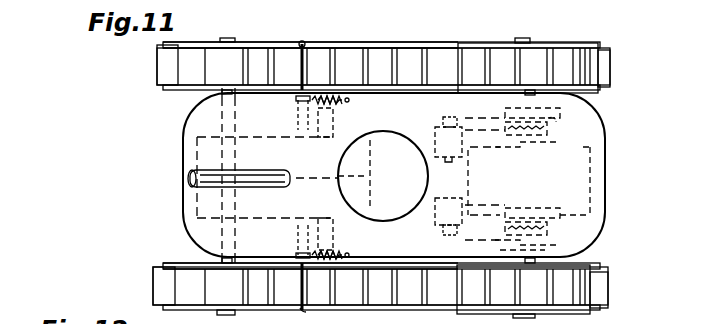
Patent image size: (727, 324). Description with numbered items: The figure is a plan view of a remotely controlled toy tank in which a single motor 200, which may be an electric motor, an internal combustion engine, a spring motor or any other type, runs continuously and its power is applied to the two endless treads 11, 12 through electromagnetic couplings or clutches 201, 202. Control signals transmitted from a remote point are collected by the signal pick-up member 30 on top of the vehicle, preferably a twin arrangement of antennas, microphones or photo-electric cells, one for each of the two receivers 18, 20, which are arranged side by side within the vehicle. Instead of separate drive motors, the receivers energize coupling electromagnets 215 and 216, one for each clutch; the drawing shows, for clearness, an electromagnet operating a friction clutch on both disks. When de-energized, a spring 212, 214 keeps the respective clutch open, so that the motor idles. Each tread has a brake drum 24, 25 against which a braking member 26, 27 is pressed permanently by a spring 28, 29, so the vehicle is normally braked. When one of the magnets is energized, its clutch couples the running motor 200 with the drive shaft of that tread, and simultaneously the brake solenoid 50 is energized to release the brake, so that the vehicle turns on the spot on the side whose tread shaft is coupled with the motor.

The endless tread 11 is at (381, 300).
The endless tread 12 is at (386, 57).
The receiver 18 is at (195, 215).
The receiver 20 is at (197, 158).
The brake drum 24 is at (250, 46).
The brake drum 25 is at (266, 306).
The braking member 26 is at (305, 44).
The braking member 27 is at (301, 308).
The spring 28 is at (343, 100).
The spring 29 is at (340, 257).
The signal pick-up member 30 is at (430, 190).
The release magnet 50 is at (333, 138).
The motor 200 is at (590, 182).
The electromagnetic coupling 201 is at (546, 126).
The electromagnetic coupling 202 is at (548, 236).
The spring 212 is at (440, 123).
The spring 214 is at (442, 234).
The coupling electromagnet 215 is at (440, 141).
The coupling electromagnet 216 is at (437, 215).